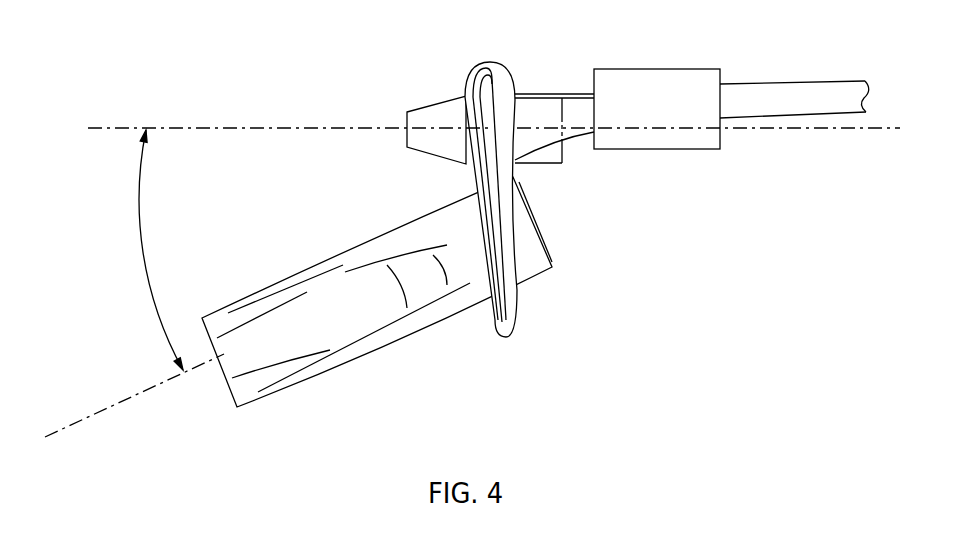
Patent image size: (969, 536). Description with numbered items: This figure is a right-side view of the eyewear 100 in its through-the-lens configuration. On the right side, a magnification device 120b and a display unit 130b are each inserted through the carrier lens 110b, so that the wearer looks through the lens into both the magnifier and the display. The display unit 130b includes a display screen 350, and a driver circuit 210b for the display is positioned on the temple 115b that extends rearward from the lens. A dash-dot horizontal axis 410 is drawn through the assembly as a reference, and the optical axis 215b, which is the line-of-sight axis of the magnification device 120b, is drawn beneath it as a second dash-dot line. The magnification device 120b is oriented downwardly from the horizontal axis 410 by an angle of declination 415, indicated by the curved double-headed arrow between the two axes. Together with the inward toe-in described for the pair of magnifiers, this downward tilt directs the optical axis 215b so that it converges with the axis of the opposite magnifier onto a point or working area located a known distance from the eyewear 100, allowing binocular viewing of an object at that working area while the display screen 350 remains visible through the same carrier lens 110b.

The eyewear 100 is at (486, 63).
The carrier lens 110b is at (516, 171).
The temple 115b is at (808, 96).
The magnification device 120b is at (368, 343).
The display unit 130b is at (427, 108).
The driver circuit 210b is at (682, 77).
The optical axis 215b is at (108, 398).
The display screen 350 is at (548, 93).
The horizontal axis 410 is at (216, 127).
The angle of declination 415 is at (141, 240).